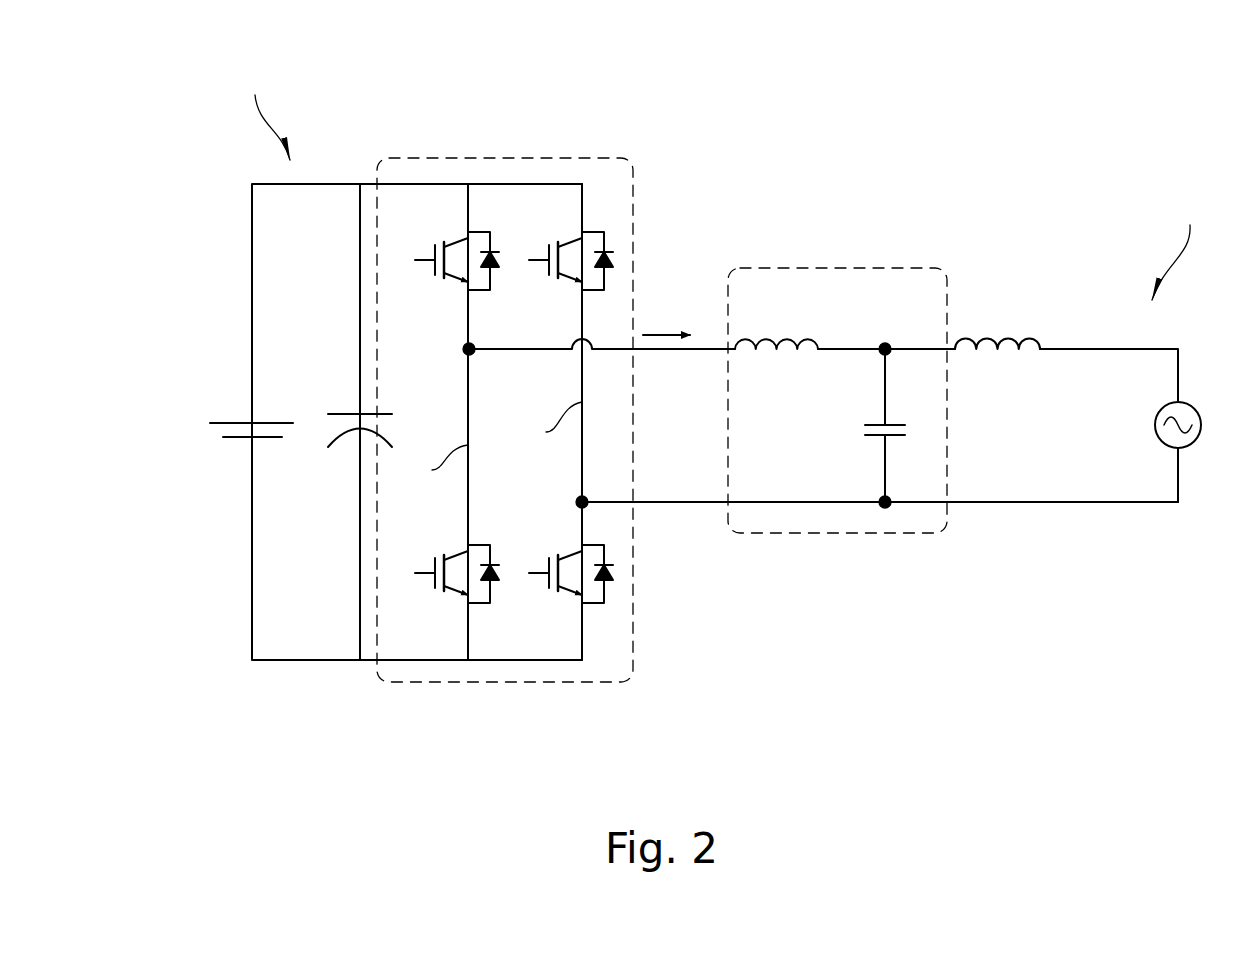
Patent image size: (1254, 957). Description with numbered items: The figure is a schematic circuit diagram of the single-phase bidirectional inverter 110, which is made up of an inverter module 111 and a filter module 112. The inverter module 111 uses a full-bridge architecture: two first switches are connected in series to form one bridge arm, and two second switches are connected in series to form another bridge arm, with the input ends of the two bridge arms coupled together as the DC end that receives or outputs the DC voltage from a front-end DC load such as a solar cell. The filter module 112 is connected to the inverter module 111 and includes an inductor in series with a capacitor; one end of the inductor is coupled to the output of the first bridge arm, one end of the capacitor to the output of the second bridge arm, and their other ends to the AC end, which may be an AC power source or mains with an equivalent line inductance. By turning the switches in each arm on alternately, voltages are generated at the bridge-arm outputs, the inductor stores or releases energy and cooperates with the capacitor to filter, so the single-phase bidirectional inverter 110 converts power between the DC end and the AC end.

The single-phase bidirectional inverter 110 is at (177, 87).
The inverter module 111 is at (481, 156).
The filter module 112 is at (837, 262).